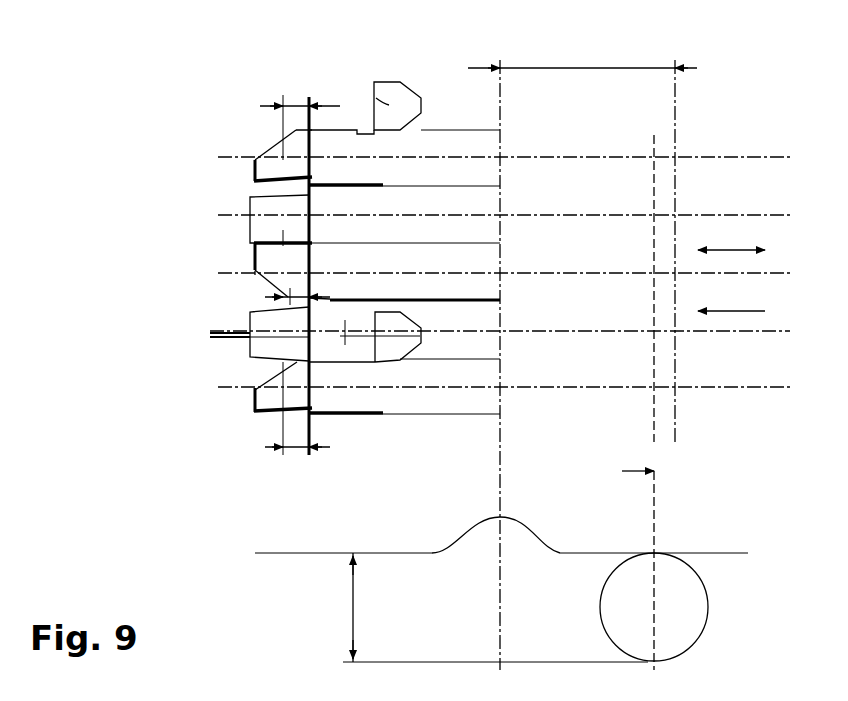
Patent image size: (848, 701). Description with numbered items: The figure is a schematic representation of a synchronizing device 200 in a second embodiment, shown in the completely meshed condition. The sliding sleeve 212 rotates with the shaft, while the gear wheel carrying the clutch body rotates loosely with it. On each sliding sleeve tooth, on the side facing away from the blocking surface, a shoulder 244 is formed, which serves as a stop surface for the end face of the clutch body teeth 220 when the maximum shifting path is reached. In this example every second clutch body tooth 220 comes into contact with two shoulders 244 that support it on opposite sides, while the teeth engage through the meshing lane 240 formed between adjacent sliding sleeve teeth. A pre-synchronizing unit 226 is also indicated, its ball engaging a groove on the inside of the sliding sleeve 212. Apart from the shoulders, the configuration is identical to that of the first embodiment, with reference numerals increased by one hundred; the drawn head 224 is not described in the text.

The synchronizing device 200 is at (98, 147).
The shoulder 244 is at (312, 176).
The clutch body tooth 220 is at (265, 209).
The head 224 is at (374, 82).
The meshing lane 240 is at (376, 207).
The sliding sleeve 212 is at (490, 391).
The pre-synchronizing unit 226 is at (690, 608).